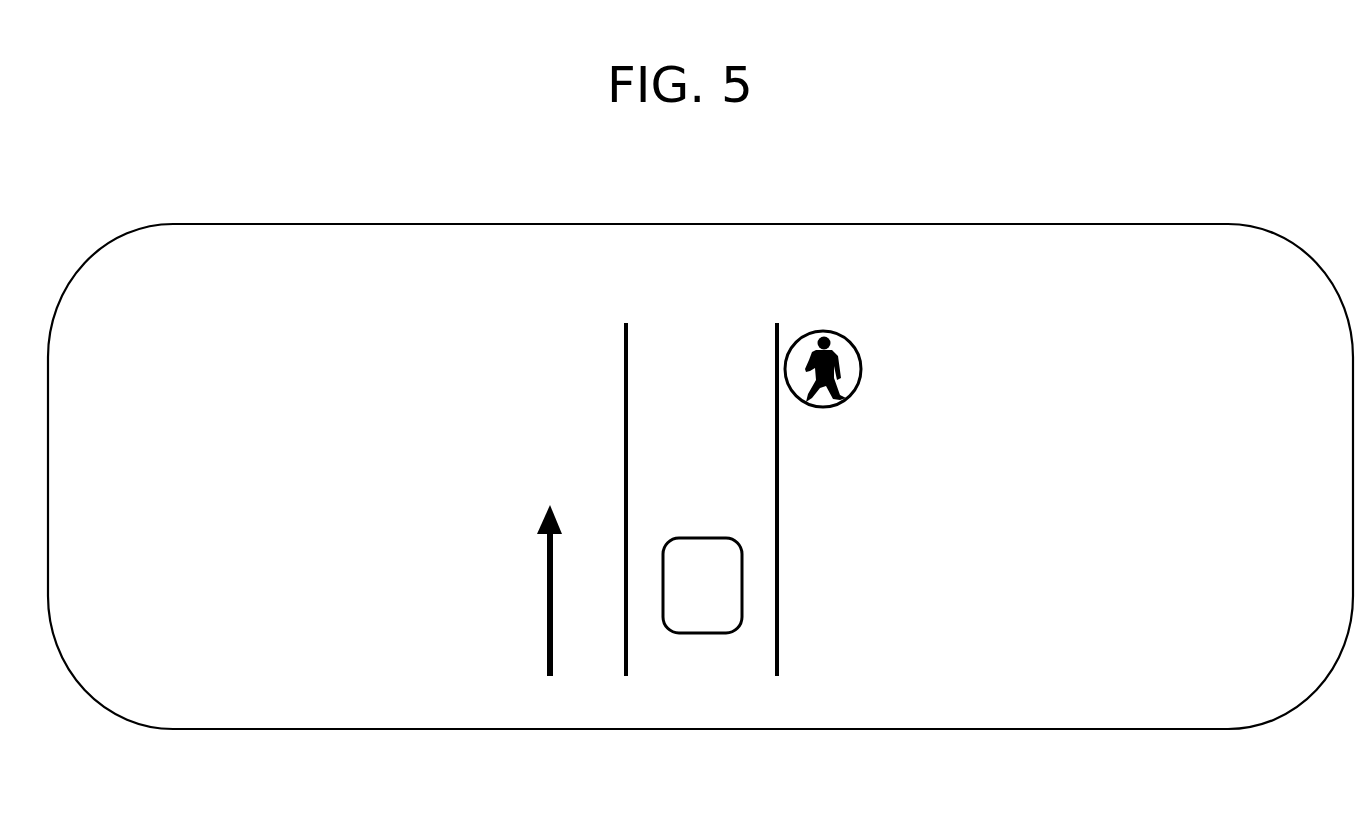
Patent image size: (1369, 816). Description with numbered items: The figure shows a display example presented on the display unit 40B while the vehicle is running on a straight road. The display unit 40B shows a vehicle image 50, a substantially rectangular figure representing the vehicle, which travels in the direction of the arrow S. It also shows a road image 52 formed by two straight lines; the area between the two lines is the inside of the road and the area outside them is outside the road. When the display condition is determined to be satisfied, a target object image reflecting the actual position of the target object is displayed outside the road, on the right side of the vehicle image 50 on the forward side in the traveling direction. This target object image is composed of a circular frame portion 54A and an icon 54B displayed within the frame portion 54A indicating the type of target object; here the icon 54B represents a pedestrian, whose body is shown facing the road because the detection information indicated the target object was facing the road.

The display unit 40B is at (1044, 224).
The road image 52 is at (634, 370).
The vehicle image 50 is at (704, 627).
The arrow S is at (546, 655).
The frame portion 54A is at (861, 366).
The icon 54B is at (835, 341).